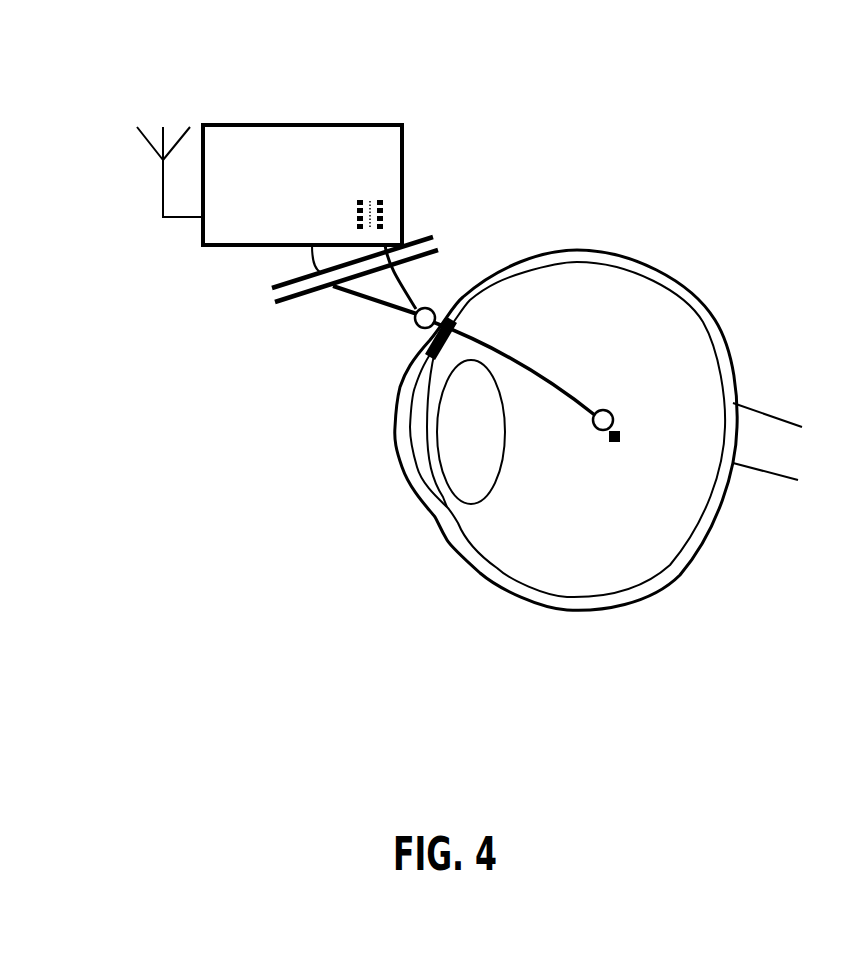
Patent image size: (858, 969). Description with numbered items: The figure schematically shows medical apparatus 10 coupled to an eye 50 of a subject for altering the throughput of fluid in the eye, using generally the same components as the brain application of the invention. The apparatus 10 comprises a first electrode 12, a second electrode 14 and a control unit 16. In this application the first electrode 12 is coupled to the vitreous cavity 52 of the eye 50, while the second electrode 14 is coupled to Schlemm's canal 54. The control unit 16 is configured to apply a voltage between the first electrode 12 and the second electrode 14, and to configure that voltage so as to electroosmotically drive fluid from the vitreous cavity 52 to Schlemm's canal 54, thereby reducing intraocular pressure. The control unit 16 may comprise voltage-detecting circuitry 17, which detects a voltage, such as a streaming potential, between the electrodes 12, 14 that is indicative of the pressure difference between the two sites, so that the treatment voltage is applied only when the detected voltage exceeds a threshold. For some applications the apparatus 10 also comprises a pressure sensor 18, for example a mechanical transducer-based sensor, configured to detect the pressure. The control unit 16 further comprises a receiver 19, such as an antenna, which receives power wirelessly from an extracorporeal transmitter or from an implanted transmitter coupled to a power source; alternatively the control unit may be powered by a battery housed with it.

The medical apparatus 10 is at (236, 294).
The first electrode 12 is at (417, 297).
The second electrode 14 is at (360, 297).
The control unit 16 is at (370, 126).
The voltage-detecting circuitry 17 is at (383, 200).
The pressure sensor 18 is at (413, 325).
The receiver 19 is at (163, 193).
The eye 50 is at (718, 337).
The vitreous cavity 52 is at (663, 430).
The Schlemm's canal 54 is at (420, 364).